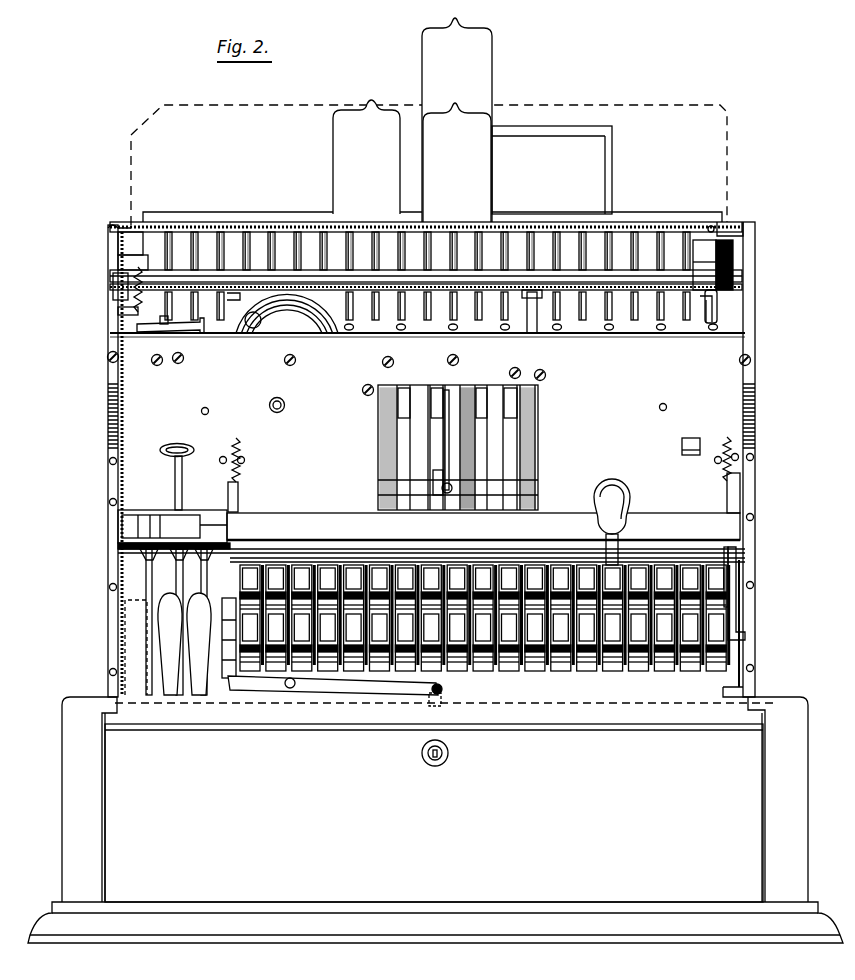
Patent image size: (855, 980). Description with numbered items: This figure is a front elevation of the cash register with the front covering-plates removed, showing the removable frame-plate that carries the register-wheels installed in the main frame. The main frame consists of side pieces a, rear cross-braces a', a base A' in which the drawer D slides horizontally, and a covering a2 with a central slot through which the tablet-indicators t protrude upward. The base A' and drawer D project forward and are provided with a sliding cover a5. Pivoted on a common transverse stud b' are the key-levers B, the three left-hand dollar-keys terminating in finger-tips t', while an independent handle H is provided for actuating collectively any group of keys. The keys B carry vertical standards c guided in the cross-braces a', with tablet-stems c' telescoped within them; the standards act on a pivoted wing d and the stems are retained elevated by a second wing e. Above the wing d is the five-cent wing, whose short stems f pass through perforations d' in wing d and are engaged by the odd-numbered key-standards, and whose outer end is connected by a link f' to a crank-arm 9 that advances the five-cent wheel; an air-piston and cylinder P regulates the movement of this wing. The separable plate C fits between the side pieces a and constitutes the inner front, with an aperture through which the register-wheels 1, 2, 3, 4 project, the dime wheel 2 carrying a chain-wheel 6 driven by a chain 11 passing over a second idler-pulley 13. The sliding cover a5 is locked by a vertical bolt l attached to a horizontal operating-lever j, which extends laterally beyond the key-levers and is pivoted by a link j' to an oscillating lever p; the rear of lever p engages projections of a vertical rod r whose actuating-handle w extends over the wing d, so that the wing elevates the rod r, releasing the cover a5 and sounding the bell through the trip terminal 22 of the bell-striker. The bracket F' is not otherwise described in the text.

The side pieces a is at (433, 459).
The rear cross-braces a' is at (433, 218).
The covering a2 is at (634, 109).
The sliding cover a5 is at (444, 710).
The base A' is at (435, 815).
The transverse shaft or stud b' is at (755, 577).
The key-levers B is at (484, 618).
The vertical standards c is at (426, 280).
The tablet-stems c' is at (420, 256).
The separable plate C is at (705, 374).
The pivoted wing d is at (494, 325).
The perforations d' is at (531, 343).
The drawer D is at (434, 813).
The second wing e is at (160, 245).
The short stems f is at (427, 315).
The link f' is at (532, 324).
The bracket F' is at (509, 298).
The bracket h is at (227, 640).
The handle H is at (612, 522).
The bar I is at (305, 522).
The operating-lever j is at (335, 719).
The link j' is at (142, 636).
The sliding bolt l is at (444, 703).
The oscillating lever p is at (120, 530).
The air-piston and cylinder P is at (735, 262).
The vertical rod r is at (130, 333).
The actuating-handle w is at (165, 326).
The tablet-indicators t is at (410, 120).
The finger-tips t' is at (173, 570).
The half-dime register-wheel 1 is at (510, 388).
The dime register-wheel 2 is at (482, 388).
The dollar register-wheel 3 is at (420, 388).
The ten-dollar register-wheel 4 is at (395, 388).
The chain-wheel 6 is at (441, 392).
The crank-arm 9 is at (535, 440).
The chain 11 is at (438, 500).
The second idler-pulley 13 is at (449, 492).
The bell-striker trip terminal 22 is at (272, 323).